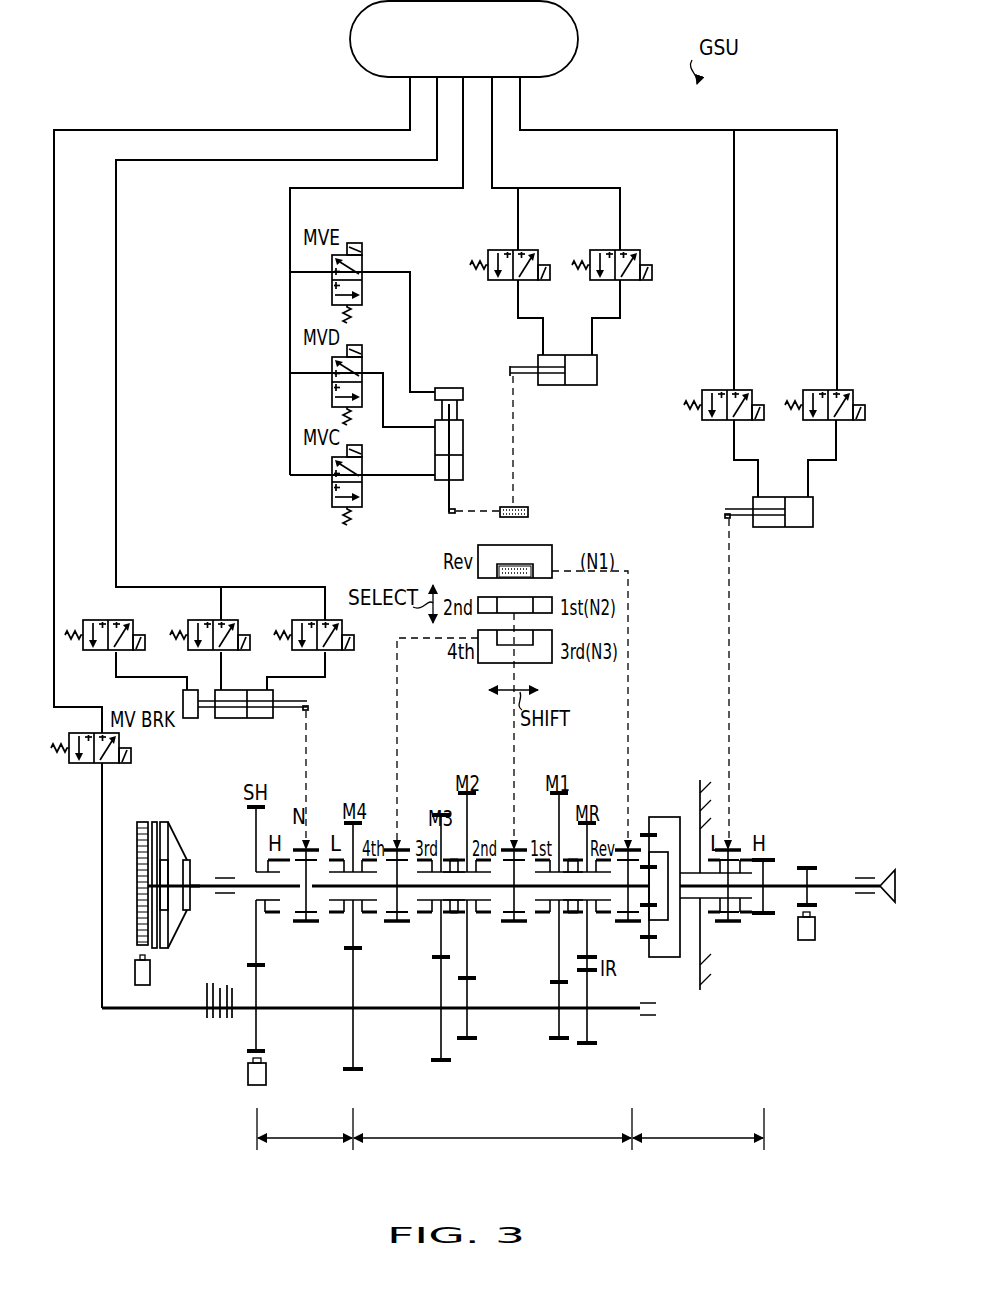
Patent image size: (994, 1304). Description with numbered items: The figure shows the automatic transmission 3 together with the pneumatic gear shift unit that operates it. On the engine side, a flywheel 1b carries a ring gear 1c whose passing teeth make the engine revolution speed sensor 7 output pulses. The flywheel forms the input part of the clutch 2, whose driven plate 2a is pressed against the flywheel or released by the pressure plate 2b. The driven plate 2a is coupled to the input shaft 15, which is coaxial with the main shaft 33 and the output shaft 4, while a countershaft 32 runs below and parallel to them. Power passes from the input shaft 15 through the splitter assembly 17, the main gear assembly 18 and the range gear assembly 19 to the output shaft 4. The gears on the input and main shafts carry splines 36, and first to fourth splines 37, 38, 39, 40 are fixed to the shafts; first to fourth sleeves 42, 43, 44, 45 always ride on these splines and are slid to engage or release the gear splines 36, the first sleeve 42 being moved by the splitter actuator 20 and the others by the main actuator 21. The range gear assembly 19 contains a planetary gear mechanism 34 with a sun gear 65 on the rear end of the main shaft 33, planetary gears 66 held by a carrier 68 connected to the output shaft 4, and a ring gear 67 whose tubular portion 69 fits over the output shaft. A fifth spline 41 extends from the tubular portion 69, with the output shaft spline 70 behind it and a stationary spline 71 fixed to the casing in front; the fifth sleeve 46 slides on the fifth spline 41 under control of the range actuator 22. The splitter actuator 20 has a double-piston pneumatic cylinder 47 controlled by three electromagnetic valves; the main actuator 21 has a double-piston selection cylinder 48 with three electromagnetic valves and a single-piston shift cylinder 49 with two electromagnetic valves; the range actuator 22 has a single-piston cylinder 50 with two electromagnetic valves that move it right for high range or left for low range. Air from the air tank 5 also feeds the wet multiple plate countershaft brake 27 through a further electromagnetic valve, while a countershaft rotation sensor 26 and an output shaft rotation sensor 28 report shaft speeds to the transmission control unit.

The air tank 5 is at (469, 50).
The splitter actuator 20 is at (212, 552).
The main actuator 21 is at (562, 458).
The range actuator 22 is at (791, 560).
The pneumatic cylinder 47 is at (258, 719).
The pneumatic cylinder for gear selection 48 is at (463, 447).
The pneumatic cylinder for shifting 49 is at (578, 386).
The pneumatic cylinder 50 is at (813, 512).
The flywheel 1b is at (141, 822).
The ring gear 1c is at (147, 886).
The clutch 2 is at (183, 778).
The driven plate 2a is at (155, 822).
The pressure plate 2b is at (168, 832).
The engine revolution speed sensor 7 is at (150, 978).
The input shaft 15 is at (252, 893).
The main shaft 33 is at (585, 890).
The countershaft 32 is at (510, 1012).
The output shaft 4 is at (778, 886).
The first sleeve 42 is at (312, 850).
The second sleeve 43 is at (404, 850).
The third sleeve 44 is at (520, 850).
The fourth sleeve 45 is at (622, 850).
The fifth sleeve 46 is at (733, 850).
The splines 36 is at (445, 920).
The first spline 37 is at (306, 924).
The second spline 38 is at (398, 924).
The third spline 39 is at (514, 924).
The fourth spline 40 is at (630, 930).
The planetary gear mechanism 34 is at (677, 999).
The sun gear 65 is at (652, 876).
The planetary gears 66 is at (658, 846).
The ring gear 67 is at (652, 834).
The carrier 68 is at (676, 925).
The tubular portion 69 is at (702, 935).
The output shaft spline 70 is at (766, 914).
The stationary spline 71 is at (720, 915).
The fifth spline 41 is at (753, 914).
The output shaft rotation sensor 28 is at (815, 930).
The countershaft brake 27 is at (217, 1050).
The countershaft rotation sensor 26 is at (248, 1086).
The transmission 3 is at (487, 1080).
The splitter assembly 17 is at (305, 1142).
The main gear assembly 18 is at (493, 1142).
The range gear assembly 19 is at (698, 1142).